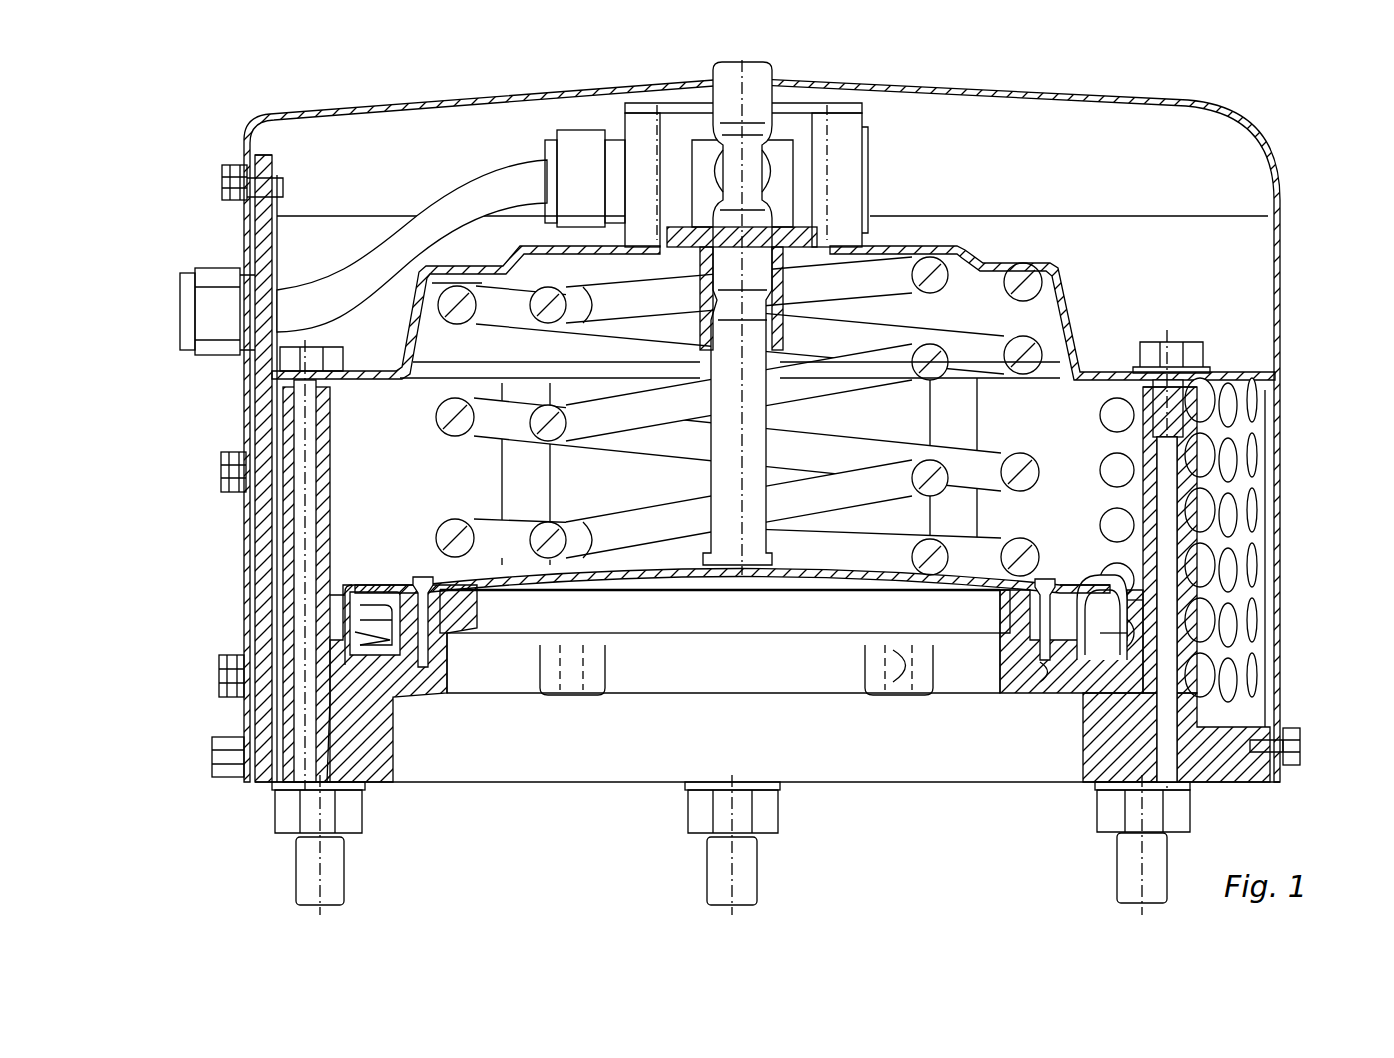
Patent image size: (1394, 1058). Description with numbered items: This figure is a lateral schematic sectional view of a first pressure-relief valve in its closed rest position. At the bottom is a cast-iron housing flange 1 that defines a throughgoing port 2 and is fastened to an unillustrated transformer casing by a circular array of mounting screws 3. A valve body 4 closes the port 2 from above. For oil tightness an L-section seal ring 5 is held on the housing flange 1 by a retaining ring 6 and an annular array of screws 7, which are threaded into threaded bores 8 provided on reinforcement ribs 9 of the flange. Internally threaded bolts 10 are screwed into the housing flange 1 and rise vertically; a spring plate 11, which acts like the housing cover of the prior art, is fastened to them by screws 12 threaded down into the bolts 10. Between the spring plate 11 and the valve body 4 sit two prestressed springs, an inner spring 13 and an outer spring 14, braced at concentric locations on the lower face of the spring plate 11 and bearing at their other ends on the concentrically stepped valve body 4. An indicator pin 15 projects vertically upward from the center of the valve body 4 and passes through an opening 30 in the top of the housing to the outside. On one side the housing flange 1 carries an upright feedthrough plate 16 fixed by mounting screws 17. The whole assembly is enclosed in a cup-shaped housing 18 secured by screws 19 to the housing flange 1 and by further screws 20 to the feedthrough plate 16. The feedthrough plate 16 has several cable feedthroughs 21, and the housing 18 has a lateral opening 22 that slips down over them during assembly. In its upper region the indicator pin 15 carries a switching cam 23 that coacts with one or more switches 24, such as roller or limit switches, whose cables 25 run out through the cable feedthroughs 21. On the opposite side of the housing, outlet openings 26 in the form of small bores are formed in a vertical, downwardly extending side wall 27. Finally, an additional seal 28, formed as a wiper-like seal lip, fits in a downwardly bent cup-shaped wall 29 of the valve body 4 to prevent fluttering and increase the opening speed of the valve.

The housing flange 1 is at (1213, 763).
The throughgoing port 2 is at (753, 673).
The mounting screws 3 is at (727, 867).
The valve body 4 is at (1003, 553).
The L-section seal ring 5 is at (1110, 580).
The retaining ring 6 is at (1143, 607).
The screws 7 is at (1117, 633).
The threaded bores 8 is at (1067, 637).
The reinforcement ribs 9 is at (1043, 672).
The bolts 10 is at (353, 647).
The spring plate 11 is at (1075, 330).
The screws 12 is at (300, 415).
The inner spring 13 is at (893, 375).
The outer spring 14 is at (983, 287).
The indicator pin 15 is at (755, 345).
The feedthrough plate 16 is at (265, 540).
The mounting screws 17 is at (225, 750).
The cup-shaped housing 18 is at (447, 102).
The screws 19 is at (1293, 747).
The screws 20 is at (237, 185).
The cable feedthroughs 21 is at (223, 290).
The lateral opening 22 is at (280, 440).
The switching cam 23 is at (753, 170).
The switches 24 is at (840, 177).
The cables 25 is at (447, 210).
The outlet openings 26 is at (1220, 415).
The side wall 27 is at (1283, 317).
The seal 28 is at (353, 660).
The cup-shaped wall 29 is at (347, 597).
The opening 30 is at (775, 82).